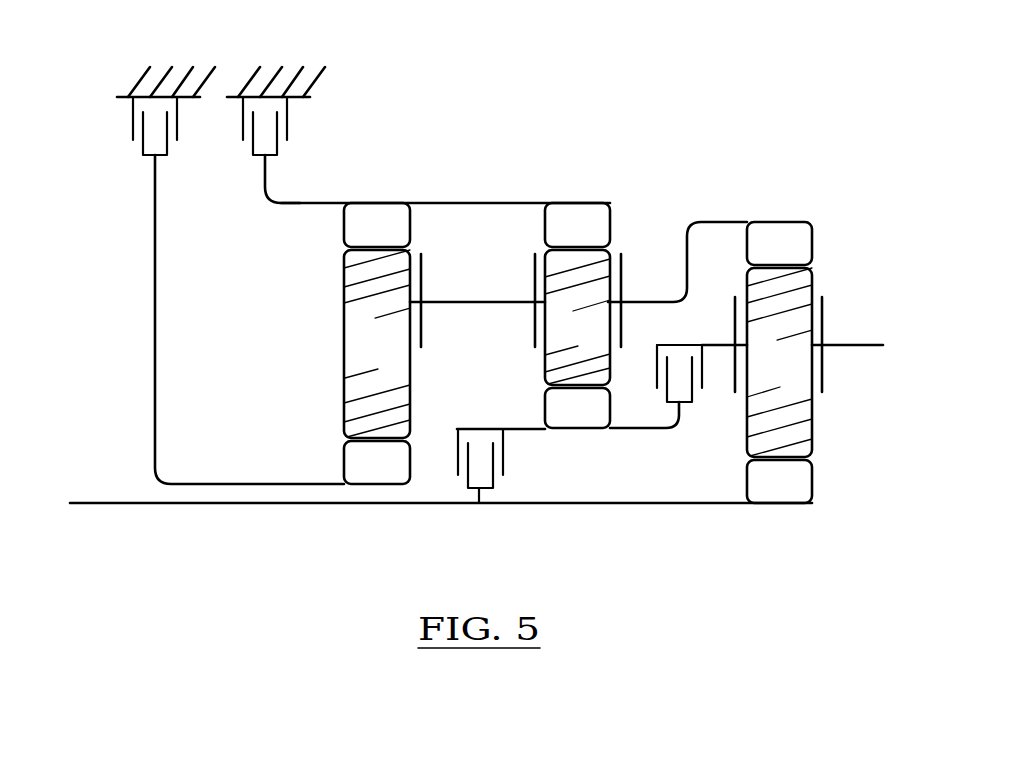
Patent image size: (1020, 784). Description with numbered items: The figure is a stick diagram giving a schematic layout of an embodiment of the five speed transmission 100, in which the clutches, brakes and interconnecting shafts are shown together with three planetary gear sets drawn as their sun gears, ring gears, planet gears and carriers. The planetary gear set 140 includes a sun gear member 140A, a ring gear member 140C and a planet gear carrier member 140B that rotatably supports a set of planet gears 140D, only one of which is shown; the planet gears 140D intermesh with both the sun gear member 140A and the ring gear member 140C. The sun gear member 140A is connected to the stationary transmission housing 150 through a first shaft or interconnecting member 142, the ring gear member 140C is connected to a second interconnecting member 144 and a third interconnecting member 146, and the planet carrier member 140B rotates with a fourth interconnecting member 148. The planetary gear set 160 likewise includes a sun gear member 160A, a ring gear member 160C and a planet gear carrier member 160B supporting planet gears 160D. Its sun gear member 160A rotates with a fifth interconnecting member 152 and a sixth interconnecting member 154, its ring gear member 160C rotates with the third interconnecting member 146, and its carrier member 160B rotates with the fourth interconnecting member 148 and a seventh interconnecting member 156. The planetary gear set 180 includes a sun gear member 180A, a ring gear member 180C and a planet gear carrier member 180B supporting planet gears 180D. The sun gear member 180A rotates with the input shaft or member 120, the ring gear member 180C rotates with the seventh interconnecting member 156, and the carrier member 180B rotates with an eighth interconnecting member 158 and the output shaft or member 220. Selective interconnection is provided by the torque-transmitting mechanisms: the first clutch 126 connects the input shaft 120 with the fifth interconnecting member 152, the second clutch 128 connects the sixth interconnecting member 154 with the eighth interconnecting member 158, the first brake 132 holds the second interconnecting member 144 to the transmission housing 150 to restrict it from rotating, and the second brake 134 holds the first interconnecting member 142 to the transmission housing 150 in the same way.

The five speed transmission 100 is at (720, 90).
The input shaft or member 120 is at (143, 505).
The first clutch 126 is at (457, 463).
The second clutch 128 is at (657, 360).
The first brake 132 is at (287, 126).
The second brake 134 is at (133, 126).
The planetary gear set 140 is at (362, 186).
The sun gear member 140A is at (375, 467).
The planet gear carrier member 140B is at (422, 277).
The ring gear member 140C is at (383, 222).
The planet gears 140D is at (407, 358).
The first shaft or interconnecting member 142 is at (155, 275).
The second shaft or interconnecting member 144 is at (263, 177).
The third shaft or interconnecting member 146 is at (465, 201).
The fourth shaft or interconnecting member 148 is at (462, 305).
The transmission housing 150 is at (257, 78).
The fifth shaft or interconnecting member 152 is at (537, 429).
The sixth shaft or interconnecting member 154 is at (645, 430).
The seventh shaft or interconnecting member 156 is at (725, 220).
The eighth shaft or interconnecting member 158 is at (717, 343).
The planetary gear set 160 is at (565, 186).
The sun gear member 160A is at (578, 408).
The planet gear carrier member 160B is at (627, 262).
The ring gear member 160C is at (585, 222).
The planet gears 160D is at (607, 331).
The planetary gear set 180 is at (765, 205).
The sun gear member 180A is at (778, 480).
The planet gear carrier member 180B is at (823, 302).
The ring gear member 180C is at (787, 233).
The planet gears 180D is at (809, 378).
The output shaft or member 220 is at (857, 348).